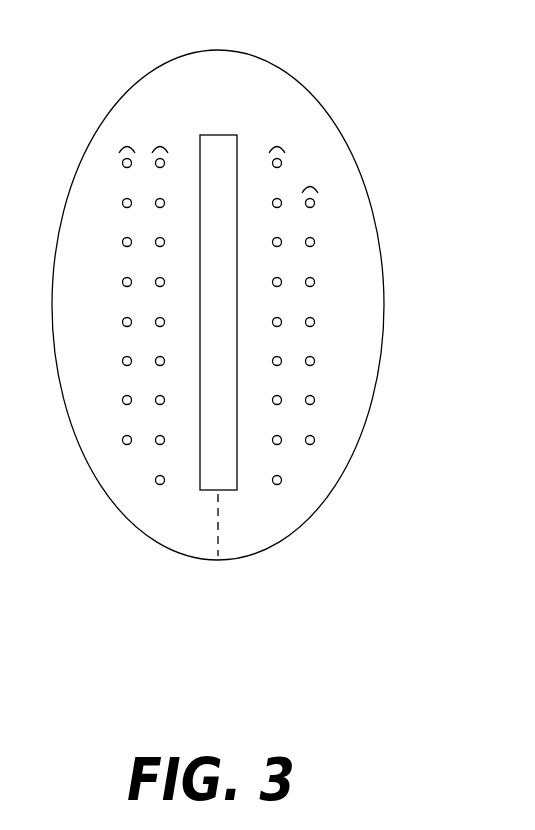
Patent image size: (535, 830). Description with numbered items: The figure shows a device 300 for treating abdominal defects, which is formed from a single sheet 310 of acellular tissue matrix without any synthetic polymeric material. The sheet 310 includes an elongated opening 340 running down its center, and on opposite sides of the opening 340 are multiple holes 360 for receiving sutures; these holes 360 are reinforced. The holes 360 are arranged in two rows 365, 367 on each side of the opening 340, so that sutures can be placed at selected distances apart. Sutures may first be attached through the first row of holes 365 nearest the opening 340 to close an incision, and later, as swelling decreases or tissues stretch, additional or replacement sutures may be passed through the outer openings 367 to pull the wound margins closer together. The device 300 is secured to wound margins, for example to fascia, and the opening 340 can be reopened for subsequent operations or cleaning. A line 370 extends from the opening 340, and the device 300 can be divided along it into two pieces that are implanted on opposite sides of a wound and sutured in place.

The device for treating abdominal defects 300 is at (357, 540).
The sheet of acellular tissue matrix 310 is at (327, 353).
The elongated opening 340 is at (204, 493).
The holes 360 is at (283, 480).
The first row of holes 365 is at (160, 142).
The second row of holes 367 is at (127, 142).
The line 370 is at (218, 533).